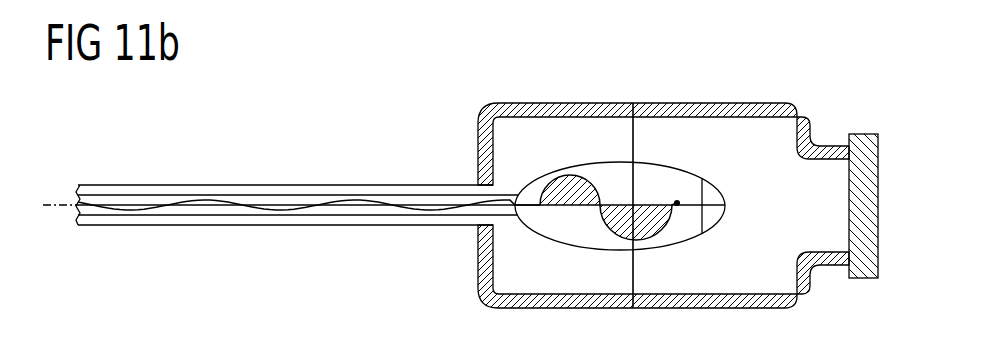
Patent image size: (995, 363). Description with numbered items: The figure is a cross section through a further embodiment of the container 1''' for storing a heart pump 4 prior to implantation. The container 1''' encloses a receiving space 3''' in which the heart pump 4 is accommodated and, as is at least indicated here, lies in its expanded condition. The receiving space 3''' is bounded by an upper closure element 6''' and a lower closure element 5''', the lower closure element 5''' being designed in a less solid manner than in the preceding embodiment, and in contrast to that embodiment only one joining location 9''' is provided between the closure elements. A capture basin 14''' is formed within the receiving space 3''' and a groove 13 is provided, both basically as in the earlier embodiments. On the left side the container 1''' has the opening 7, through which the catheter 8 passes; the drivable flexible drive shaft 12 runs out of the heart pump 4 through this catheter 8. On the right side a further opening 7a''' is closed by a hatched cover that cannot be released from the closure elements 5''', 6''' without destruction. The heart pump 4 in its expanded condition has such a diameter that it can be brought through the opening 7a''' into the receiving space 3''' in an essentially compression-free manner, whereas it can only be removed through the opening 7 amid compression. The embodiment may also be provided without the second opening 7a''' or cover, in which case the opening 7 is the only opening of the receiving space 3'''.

The container 1''' is at (906, 206).
The receiving space 3''' is at (632, 205).
The heart pump 4 is at (683, 243).
The lower closure element 5''' is at (832, 293).
The closure element 6''' is at (616, 173).
The opening 7 is at (483, 222).
The opening 7a''' is at (826, 128).
The catheter 8 is at (153, 200).
The joining location 9''' is at (600, 139).
The drive shaft 12 is at (52, 205).
The groove 13 is at (243, 190).
The capture basin 14''' is at (626, 148).